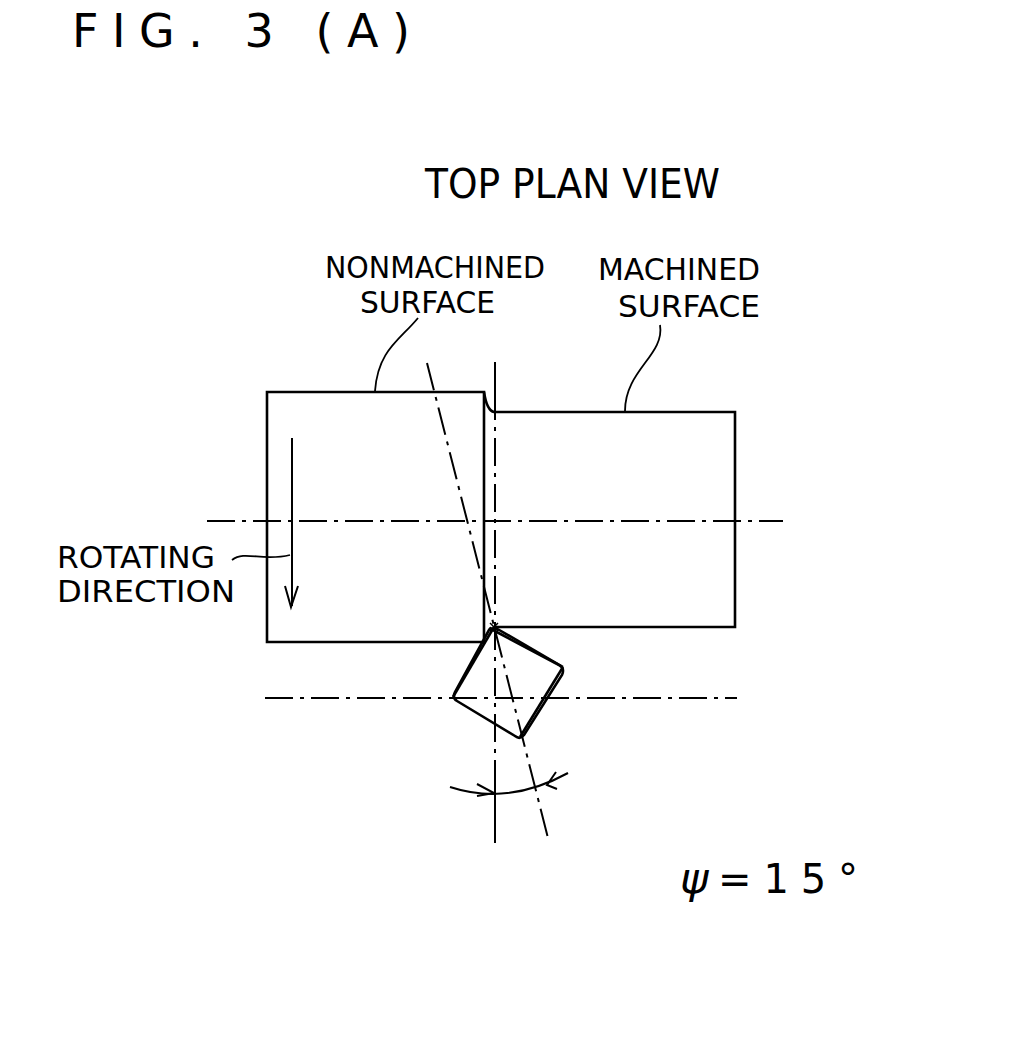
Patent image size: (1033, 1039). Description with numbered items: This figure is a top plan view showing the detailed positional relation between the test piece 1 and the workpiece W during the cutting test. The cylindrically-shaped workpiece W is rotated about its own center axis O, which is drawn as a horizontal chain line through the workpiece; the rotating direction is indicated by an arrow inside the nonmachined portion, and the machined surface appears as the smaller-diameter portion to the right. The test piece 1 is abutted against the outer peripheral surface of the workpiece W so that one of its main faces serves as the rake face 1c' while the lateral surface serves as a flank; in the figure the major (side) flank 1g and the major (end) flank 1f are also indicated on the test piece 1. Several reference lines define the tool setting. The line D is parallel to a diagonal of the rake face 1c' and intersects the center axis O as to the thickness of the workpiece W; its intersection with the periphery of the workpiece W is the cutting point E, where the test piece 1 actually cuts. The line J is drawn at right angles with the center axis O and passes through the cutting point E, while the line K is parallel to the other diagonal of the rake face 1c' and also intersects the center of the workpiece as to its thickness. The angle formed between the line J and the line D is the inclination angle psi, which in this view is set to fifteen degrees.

The test piece 1 is at (435, 765).
The major (end) flank 1f is at (545, 653).
The major (side) flank 1g is at (453, 697).
The rake face 1c' is at (599, 718).
The workpiece W is at (308, 391).
The line at right angles with O intersecting E J is at (496, 380).
The center axis of workpiece O is at (515, 524).
The line parallel to the other diagonal of main face 1c' K is at (518, 700).
The line parallel to a diagonal of main face 1c' D is at (547, 827).
The cutting point E is at (495, 626).